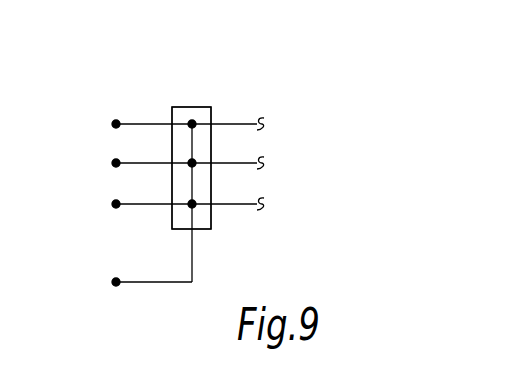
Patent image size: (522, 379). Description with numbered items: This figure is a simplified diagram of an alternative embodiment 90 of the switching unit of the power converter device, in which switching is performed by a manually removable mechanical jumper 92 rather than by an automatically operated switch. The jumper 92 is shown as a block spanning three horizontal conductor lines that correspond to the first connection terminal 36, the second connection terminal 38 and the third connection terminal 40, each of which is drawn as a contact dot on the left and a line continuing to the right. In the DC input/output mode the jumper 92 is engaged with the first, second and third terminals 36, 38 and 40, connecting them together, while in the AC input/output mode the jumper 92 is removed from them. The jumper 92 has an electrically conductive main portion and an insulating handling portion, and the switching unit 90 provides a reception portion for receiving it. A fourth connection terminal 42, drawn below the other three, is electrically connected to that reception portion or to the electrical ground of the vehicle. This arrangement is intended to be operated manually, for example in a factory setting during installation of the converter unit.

The alternative embodiment of the switching unit 90 is at (253, 97).
The manually removable mechanical jumper 92 is at (183, 106).
The first connection terminal 36 is at (112, 125).
The second connection terminal 38 is at (112, 164).
The third connection terminal 40 is at (112, 205).
The fourth connection terminal 42 is at (112, 284).